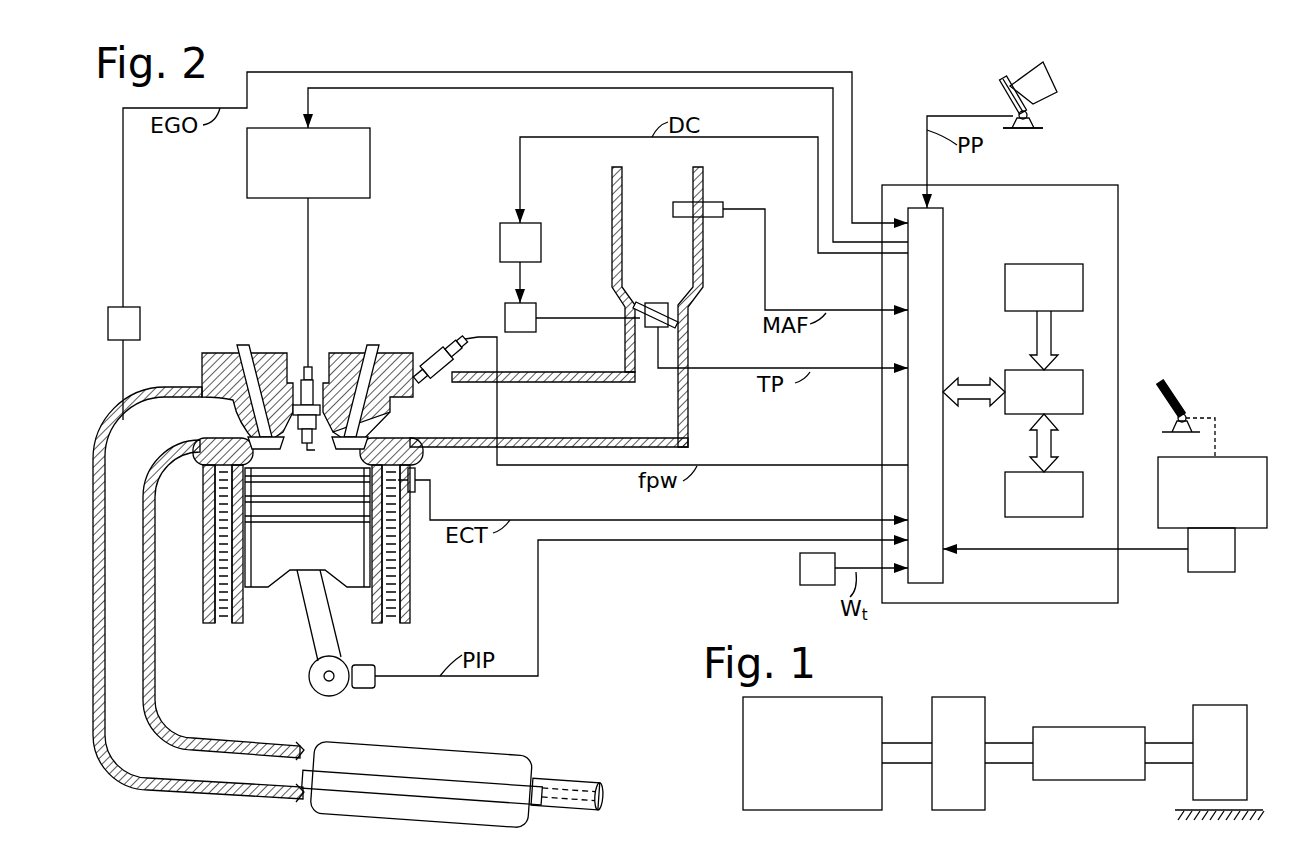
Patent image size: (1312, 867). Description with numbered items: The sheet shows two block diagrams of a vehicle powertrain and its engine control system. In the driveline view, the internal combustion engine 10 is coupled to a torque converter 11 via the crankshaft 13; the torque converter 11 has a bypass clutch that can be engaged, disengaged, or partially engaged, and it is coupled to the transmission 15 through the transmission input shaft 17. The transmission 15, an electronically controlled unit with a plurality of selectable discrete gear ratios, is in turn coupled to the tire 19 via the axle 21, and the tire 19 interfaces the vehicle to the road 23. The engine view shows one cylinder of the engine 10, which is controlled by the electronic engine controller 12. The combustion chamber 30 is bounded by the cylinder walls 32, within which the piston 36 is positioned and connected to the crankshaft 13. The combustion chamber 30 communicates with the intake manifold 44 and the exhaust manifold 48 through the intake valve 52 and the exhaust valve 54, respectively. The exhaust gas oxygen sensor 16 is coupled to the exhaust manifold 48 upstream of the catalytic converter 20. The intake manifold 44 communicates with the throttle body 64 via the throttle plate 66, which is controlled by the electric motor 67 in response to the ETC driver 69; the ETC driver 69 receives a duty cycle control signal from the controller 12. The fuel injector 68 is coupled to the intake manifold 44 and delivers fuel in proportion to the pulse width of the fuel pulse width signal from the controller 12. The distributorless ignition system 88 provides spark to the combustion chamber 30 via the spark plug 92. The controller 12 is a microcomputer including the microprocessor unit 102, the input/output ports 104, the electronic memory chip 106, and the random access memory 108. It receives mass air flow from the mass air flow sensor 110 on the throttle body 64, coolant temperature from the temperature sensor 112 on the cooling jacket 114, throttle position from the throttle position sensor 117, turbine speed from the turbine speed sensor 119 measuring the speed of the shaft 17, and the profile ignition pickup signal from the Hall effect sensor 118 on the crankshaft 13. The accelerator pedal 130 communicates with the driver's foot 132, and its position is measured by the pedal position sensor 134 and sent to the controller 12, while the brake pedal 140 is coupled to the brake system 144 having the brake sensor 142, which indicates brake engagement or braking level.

In FIG. 2, the internal combustion engine 10 is at (235, 702).
In FIG. 1, the internal combustion engine 10 is at (870, 726).
In FIG. 1, the torque converter 11 is at (980, 726).
In FIG. 2, the electronic engine controller 12 is at (1082, 185).
In FIG. 2, the crankshaft 13 is at (328, 690).
In FIG. 1, the crankshaft 13 is at (905, 741).
In FIG. 1, the transmission 15 is at (1137, 754).
In FIG. 2, the exhaust gas oxygen sensor 16 is at (130, 307).
In FIG. 1, the transmission input shaft 17 is at (1008, 741).
In FIG. 1, the tire 19 is at (1237, 734).
In FIG. 2, the catalytic converter 20 is at (500, 746).
In FIG. 1, the axle 21 is at (1160, 741).
In FIG. 1, the road 23 is at (1258, 810).
In FIG. 2, the combustion chamber 30 is at (300, 472).
In FIG. 2, the cylinder walls 32 is at (250, 610).
In FIG. 2, the piston 36 is at (305, 560).
In FIG. 2, the intake manifold 44 is at (605, 427).
In FIG. 2, the exhaust manifold 48 is at (125, 462).
In FIG. 2, the intake valve 52 is at (355, 437).
In FIG. 2, the exhaust valve 54 is at (255, 437).
In FIG. 2, the throttle body 64 is at (680, 186).
In FIG. 2, the throttle plate 66 is at (643, 305).
In FIG. 2, the electric motor 67 is at (525, 303).
In FIG. 2, the fuel injector 68 is at (445, 357).
In FIG. 2, the ETC driver 69 is at (527, 224).
In FIG. 2, the distributorless ignition system 88 is at (332, 128).
In FIG. 2, the spark plug 92 is at (310, 372).
In FIG. 2, the microprocessor unit 102 is at (1060, 369).
In FIG. 2, the input/output ports 104 is at (945, 252).
In FIG. 2, the electronic memory chip 106 is at (1032, 264).
In FIG. 2, the random access memory 108 is at (1060, 471).
In FIG. 2, the mass air flow sensor 110 is at (723, 203).
In FIG. 2, the temperature sensor 112 is at (420, 468).
In FIG. 2, the cooling jacket 114 is at (397, 590).
In FIG. 2, the throttle position sensor 117 is at (662, 301).
In FIG. 2, the Hall effect sensor 118 is at (360, 665).
In FIG. 2, the turbine speed sensor 119 is at (800, 566).
In FIG. 2, the accelerator pedal 130 is at (1003, 92).
In FIG. 2, the driver's foot 132 is at (1040, 80).
In FIG. 2, the pedal position sensor 134 is at (1035, 120).
In FIG. 2, the brake pedal 140 is at (1160, 400).
In FIG. 2, the brake sensor 142 is at (1235, 540).
In FIG. 2, the brake system 144 is at (1238, 456).